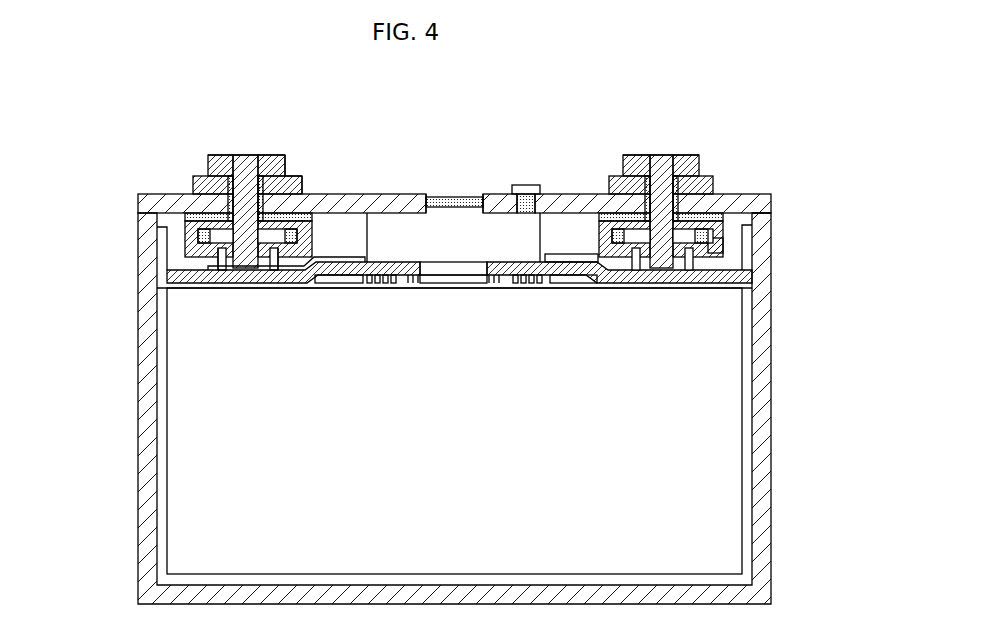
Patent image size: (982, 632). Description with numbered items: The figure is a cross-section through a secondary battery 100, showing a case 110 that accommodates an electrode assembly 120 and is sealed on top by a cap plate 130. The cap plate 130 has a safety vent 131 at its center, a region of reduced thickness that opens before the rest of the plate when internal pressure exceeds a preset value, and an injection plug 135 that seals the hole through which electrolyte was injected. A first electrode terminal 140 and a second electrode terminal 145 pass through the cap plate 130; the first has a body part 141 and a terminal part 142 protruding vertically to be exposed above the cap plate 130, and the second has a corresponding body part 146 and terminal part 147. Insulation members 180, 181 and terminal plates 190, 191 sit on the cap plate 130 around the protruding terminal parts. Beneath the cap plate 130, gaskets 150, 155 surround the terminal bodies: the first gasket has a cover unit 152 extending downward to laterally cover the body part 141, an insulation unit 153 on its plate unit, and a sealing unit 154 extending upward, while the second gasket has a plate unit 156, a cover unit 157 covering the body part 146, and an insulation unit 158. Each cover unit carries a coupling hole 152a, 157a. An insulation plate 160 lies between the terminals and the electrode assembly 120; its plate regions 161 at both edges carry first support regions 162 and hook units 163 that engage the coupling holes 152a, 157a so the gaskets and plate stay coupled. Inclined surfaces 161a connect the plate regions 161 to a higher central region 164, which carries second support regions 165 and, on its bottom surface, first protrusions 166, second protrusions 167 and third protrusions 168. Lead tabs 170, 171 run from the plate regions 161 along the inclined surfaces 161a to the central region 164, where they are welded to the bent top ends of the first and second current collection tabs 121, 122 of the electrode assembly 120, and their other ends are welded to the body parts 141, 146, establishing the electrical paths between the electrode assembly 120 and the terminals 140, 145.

The secondary battery 100 is at (78, 97).
The case 110 is at (165, 380).
The electrode assembly 120 is at (750, 418).
The first current collection tab 121 is at (359, 277).
The second current collection tab 122 is at (578, 285).
The cap plate 130 is at (772, 198).
The safety vent 131 is at (455, 197).
The injection plug 135 is at (526, 185).
The first electrode terminal 140 is at (215, 250).
The body part 141 is at (228, 222).
The terminal part 142 is at (245, 168).
The second electrode terminal 145 is at (697, 247).
The body part 146 is at (680, 232).
The terminal part 147 is at (661, 165).
The gasket 150 is at (184, 234).
The cover unit 152 is at (198, 232).
The coupling hole 152a is at (224, 270).
The insulation unit 153 is at (308, 218).
The sealing unit 154 is at (280, 158).
The gasket 155 is at (724, 232).
The plate unit 156 is at (704, 224).
The cover unit 157 is at (613, 284).
The coupling hole 157a is at (638, 268).
The insulation unit 158 is at (755, 193).
The insulation plate 160 is at (138, 268).
The plate region 161 is at (180, 277).
The inclined surface 161a is at (318, 284).
The first support region 162 is at (160, 243).
The hook unit 163 is at (277, 267).
The central region 164 is at (430, 285).
The second support region 165 is at (540, 230).
The first protrusion 166 is at (393, 285).
The second protrusion 167 is at (531, 285).
The third protrusion 168 is at (495, 285).
The lead tab 170 is at (236, 271).
The lead tab 171 is at (684, 270).
The insulation member 180 is at (302, 182).
The insulation member 181 is at (620, 158).
The terminal plate 190 is at (213, 155).
The terminal plate 191 is at (690, 157).